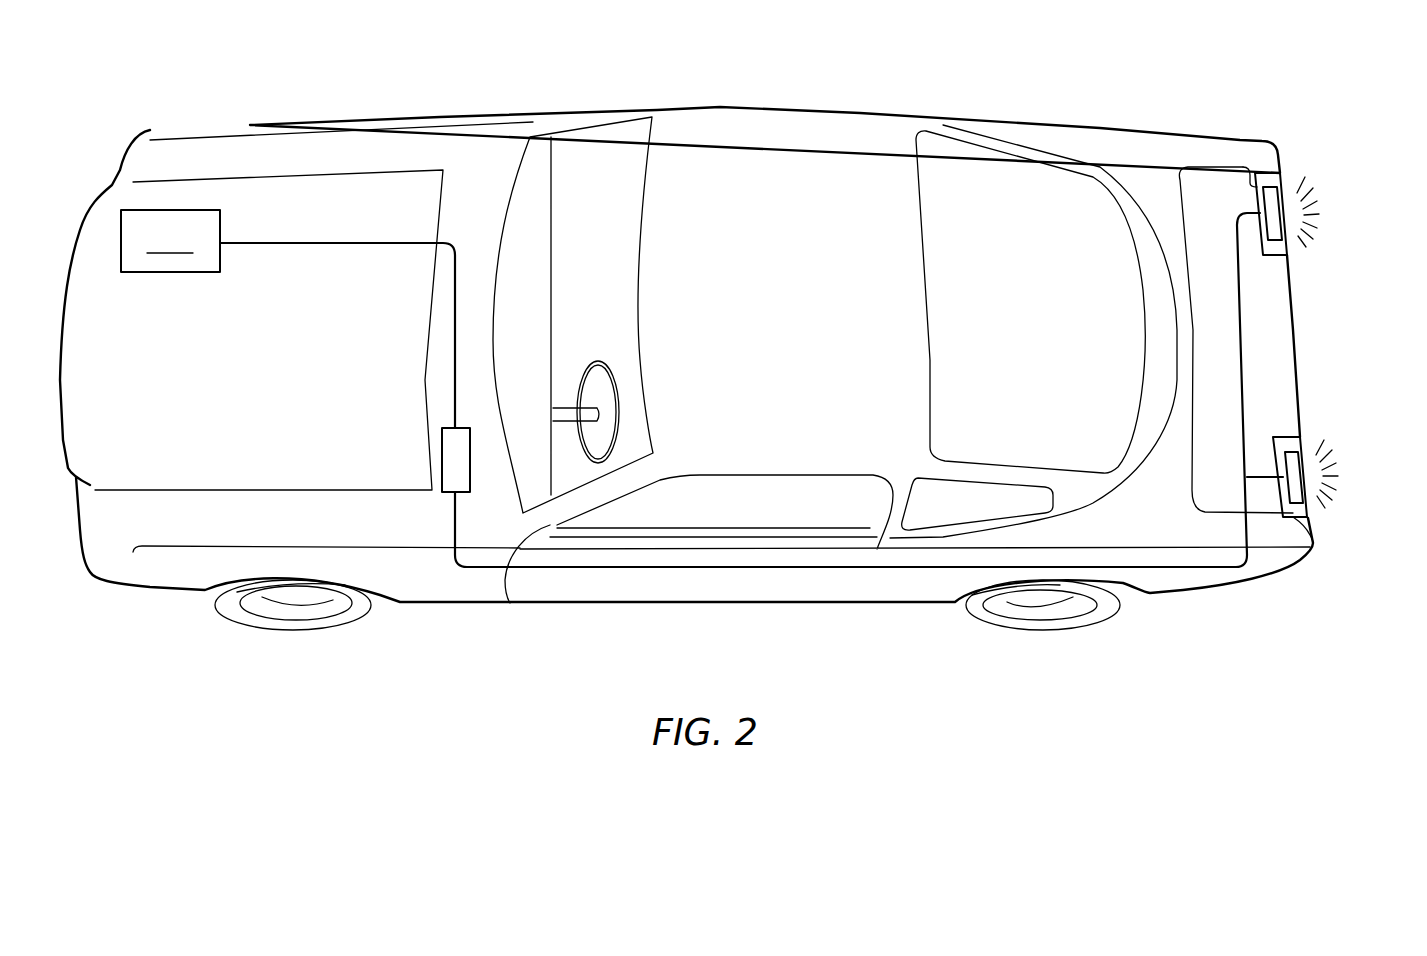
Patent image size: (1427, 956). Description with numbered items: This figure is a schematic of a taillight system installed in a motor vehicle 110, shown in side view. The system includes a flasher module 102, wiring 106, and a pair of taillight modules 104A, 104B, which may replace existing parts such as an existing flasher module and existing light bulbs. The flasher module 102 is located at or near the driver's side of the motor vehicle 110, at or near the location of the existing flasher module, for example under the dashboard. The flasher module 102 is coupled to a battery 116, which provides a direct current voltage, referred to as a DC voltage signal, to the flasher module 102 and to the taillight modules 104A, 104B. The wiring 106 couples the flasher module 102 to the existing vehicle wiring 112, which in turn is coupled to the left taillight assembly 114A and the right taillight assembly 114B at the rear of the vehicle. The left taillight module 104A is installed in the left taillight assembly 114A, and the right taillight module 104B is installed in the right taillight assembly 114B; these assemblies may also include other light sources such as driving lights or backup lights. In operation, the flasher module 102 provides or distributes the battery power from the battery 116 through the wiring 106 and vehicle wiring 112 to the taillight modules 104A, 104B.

The flasher module 102 is at (441, 452).
The left taillight module 104A is at (1307, 443).
The right taillight module 104B is at (1290, 175).
The wiring 106 is at (455, 524).
The motor vehicle 110 is at (728, 108).
The vehicle wiring 112 is at (787, 568).
The left taillight assembly 114A is at (1312, 537).
The right taillight assembly 114B is at (1240, 167).
The battery 116 is at (170, 241).